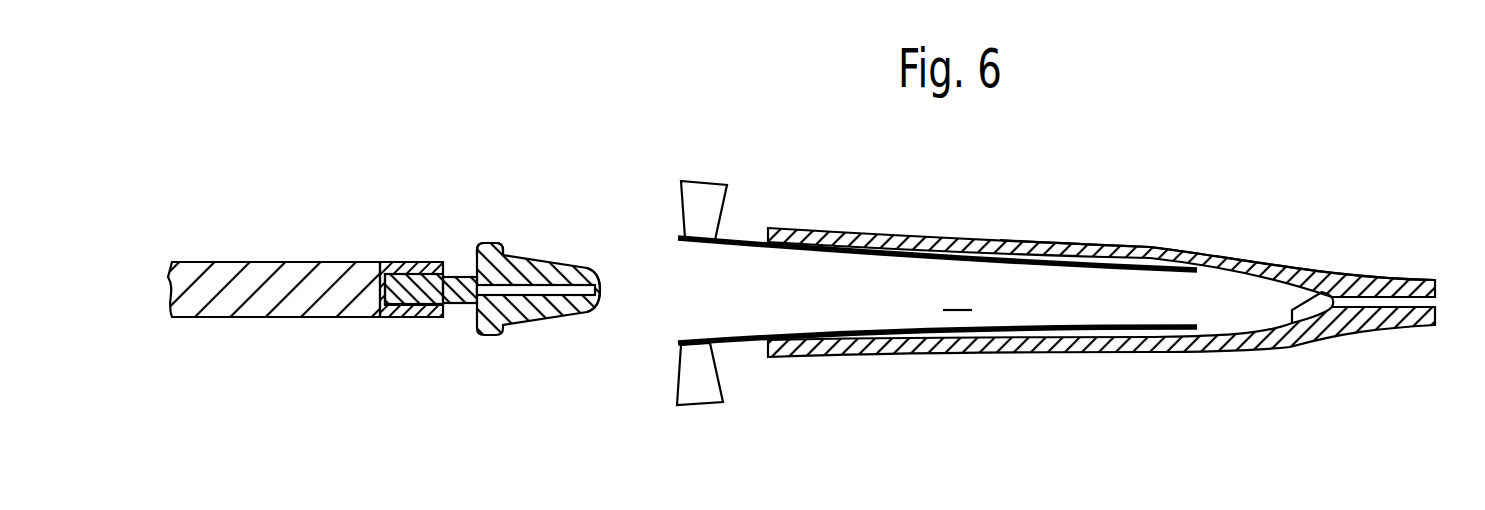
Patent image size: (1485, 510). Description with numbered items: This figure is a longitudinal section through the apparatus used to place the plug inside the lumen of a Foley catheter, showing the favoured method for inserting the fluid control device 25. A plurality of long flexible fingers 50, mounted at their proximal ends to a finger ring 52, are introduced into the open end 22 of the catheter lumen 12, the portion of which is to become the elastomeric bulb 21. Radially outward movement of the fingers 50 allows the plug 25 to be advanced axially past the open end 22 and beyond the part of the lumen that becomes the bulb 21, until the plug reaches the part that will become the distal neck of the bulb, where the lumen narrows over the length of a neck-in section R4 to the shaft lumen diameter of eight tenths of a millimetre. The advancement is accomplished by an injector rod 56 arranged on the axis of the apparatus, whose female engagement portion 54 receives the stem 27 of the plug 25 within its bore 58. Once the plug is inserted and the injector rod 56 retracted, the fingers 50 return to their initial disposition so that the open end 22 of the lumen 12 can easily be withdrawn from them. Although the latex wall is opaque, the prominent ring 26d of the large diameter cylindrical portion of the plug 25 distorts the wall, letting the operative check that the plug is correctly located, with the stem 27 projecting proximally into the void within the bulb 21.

The injector rod 56 is at (240, 277).
The female engagement portion 54 is at (405, 263).
The bore 58 is at (403, 317).
The stem 27 is at (457, 293).
The fluid control device 25 is at (543, 257).
The prominent ring 26d is at (487, 240).
The neck-in section R4 is at (603, 303).
The finger ring 52 is at (698, 190).
The flexible fingers 50 is at (740, 242).
The open end 22 is at (792, 230).
The elastomeric bulb 21 is at (1105, 246).
The lumen 12 is at (957, 291).